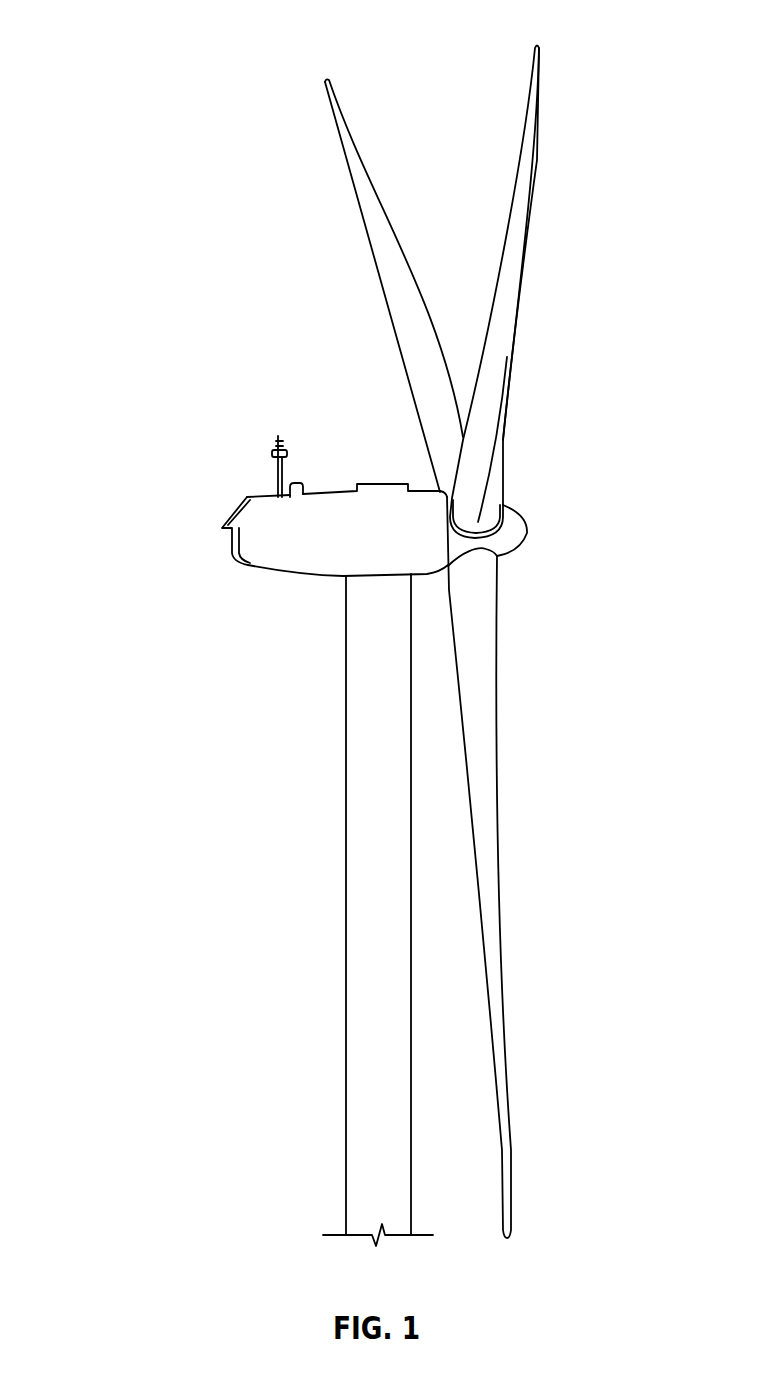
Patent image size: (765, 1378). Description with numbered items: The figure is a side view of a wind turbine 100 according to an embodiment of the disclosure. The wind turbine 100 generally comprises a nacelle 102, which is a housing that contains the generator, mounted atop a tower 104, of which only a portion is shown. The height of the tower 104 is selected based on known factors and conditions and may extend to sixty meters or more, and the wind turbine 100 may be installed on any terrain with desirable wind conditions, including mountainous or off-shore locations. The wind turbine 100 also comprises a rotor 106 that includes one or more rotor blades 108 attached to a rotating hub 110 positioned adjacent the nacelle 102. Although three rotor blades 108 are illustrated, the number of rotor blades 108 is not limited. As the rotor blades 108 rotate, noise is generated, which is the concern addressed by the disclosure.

The wind turbine 100 is at (171, 49).
The nacelle 102 is at (272, 568).
The tower 104 is at (346, 842).
The rotor 106 is at (583, 318).
The rotor blades 108 is at (348, 120).
The rotating hub 110 is at (527, 533).